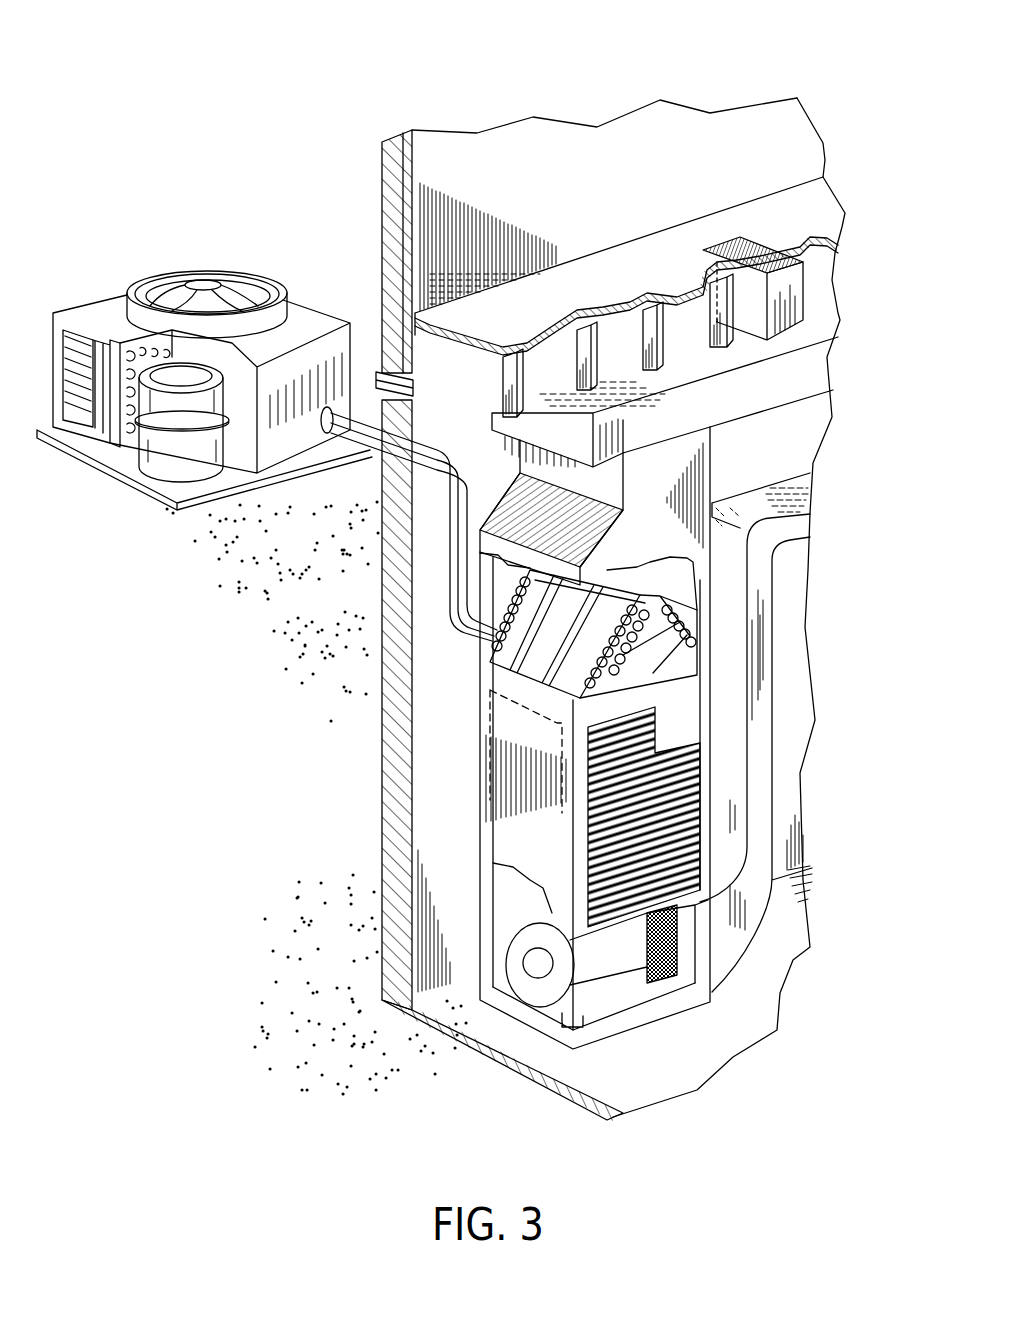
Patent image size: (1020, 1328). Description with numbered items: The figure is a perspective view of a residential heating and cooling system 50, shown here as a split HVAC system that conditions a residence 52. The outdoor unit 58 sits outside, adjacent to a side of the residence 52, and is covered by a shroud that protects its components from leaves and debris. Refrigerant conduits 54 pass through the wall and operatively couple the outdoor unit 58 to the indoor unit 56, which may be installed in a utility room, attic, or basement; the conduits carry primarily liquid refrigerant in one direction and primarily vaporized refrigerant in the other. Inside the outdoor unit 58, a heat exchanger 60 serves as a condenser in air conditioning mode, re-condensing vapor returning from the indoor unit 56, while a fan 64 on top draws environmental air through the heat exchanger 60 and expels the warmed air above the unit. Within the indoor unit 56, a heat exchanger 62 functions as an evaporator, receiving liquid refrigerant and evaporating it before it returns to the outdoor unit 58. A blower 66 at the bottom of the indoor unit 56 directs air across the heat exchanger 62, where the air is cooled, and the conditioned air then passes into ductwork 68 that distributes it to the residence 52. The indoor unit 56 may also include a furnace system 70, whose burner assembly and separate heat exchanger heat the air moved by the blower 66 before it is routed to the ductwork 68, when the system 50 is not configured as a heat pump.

The residential heating and cooling system 50 is at (202, 97).
The residence 52 is at (520, 147).
The refrigerant conduits 54 is at (443, 540).
The indoor unit 56 is at (458, 795).
The outdoor unit 58 is at (204, 346).
The heat exchanger 60 is at (130, 353).
The heat exchanger 62 is at (545, 660).
The fan 64 is at (223, 283).
The blower 66 is at (530, 990).
The ductwork 68 is at (781, 285).
The furnace system 70 is at (490, 770).